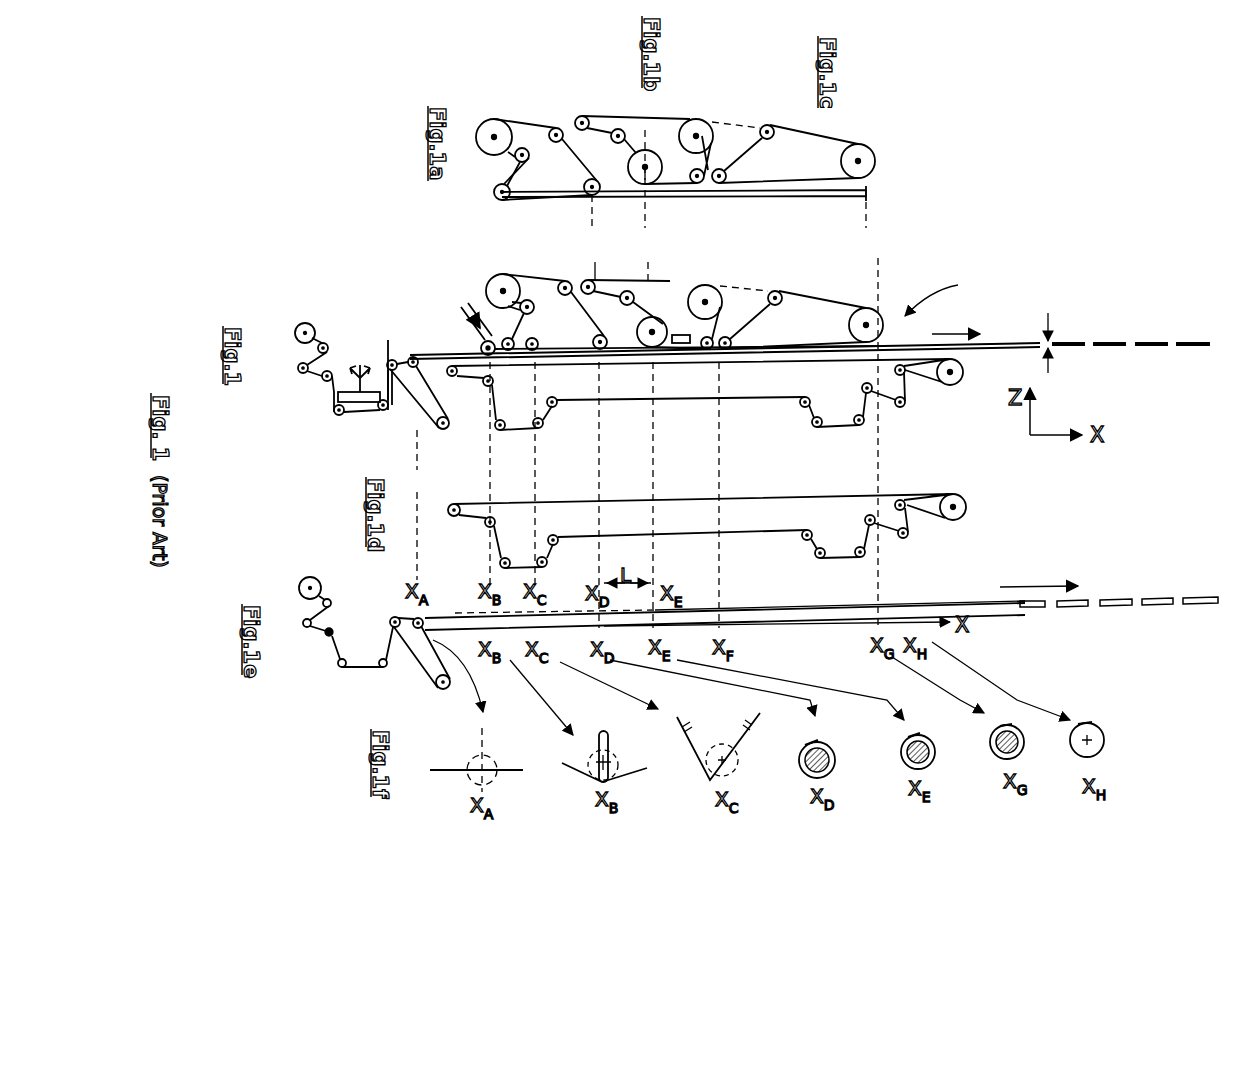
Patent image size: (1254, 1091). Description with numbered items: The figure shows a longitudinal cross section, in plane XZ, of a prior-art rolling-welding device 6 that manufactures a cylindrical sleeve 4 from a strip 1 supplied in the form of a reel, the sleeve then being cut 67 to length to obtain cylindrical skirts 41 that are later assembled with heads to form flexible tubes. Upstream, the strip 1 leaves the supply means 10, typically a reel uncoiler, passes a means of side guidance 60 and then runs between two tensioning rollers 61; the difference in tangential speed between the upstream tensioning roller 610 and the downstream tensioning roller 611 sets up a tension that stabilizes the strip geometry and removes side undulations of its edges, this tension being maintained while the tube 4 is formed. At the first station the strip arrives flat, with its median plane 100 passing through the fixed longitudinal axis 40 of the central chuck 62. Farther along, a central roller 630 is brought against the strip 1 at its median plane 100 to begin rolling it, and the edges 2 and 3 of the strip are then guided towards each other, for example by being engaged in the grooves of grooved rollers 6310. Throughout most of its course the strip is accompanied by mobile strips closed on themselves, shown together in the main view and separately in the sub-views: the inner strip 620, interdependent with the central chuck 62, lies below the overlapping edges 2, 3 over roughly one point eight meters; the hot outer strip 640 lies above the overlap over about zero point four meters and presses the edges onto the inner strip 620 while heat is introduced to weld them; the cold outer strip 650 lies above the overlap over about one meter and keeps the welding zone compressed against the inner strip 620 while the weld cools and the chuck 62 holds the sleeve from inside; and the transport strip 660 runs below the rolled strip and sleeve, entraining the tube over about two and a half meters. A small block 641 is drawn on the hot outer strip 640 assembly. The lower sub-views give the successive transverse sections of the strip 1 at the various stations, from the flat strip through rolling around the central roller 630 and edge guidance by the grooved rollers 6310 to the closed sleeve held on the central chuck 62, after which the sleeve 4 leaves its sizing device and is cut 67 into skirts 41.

In FIG. 1, the strip 1 is at (304, 322).
In FIG. 1E, the strip 1 is at (320, 580).
In FIG. 1, the means of supplying the strip 10 is at (300, 362).
In FIG. 1, the means of side guidance 60 is at (340, 380).
In FIG. 1, the tensioning rollers 61 is at (420, 418).
In FIG. 1, the upstream tensioning roller 610 is at (394, 362).
In FIG. 1, the downstream tensioning roller 611 is at (448, 426).
In FIG. 1, the central roller 630 is at (478, 343).
In FIG. 1F, the central roller 630 is at (607, 736).
In FIG. 1, the grooved rollers 6310 is at (522, 347).
In FIG. 1F, the grooved rollers 6310 is at (718, 743).
In FIG. 1A, the inner strip 620 is at (548, 205).
In FIG. 1A, the central chuck 62 is at (710, 198).
In FIG. 1, the central chuck 62 is at (683, 311).
In FIG. 1F, the central chuck 62 is at (808, 777).
In FIG. 1B, the hot outer strip 640 is at (690, 119).
In FIG. 1, the hot outer strip 640 is at (670, 281).
In FIG. 1, the belt tensioner 641 is at (678, 334).
In FIG. 1C, the cold outer strip 650 is at (845, 145).
In FIG. 1, the cold outer strip 650 is at (812, 300).
In FIG. 1, the transport strip 660 is at (795, 488).
In FIG. 1D, the transport strip 660 is at (707, 531).
In FIG. 1, the device 6 is at (938, 293).
In FIG. 1, the sleeve 4 is at (1003, 338).
In FIG. 1E, the sleeve 4 is at (1028, 618).
In FIG. 1, the cylindrical skirts 41 is at (1150, 347).
In FIG. 1E, the cylindrical skirts 41 is at (1155, 610).
In FIG. 1, the cut 67 is at (1052, 325).
In FIG. 1F, the median plane 100 is at (484, 750).
In FIG. 1F, the fixed longitudinal axis 40 is at (492, 776).
In FIG. 1F, the edge 2 is at (565, 770).
In FIG. 1F, the edge 3 is at (645, 770).